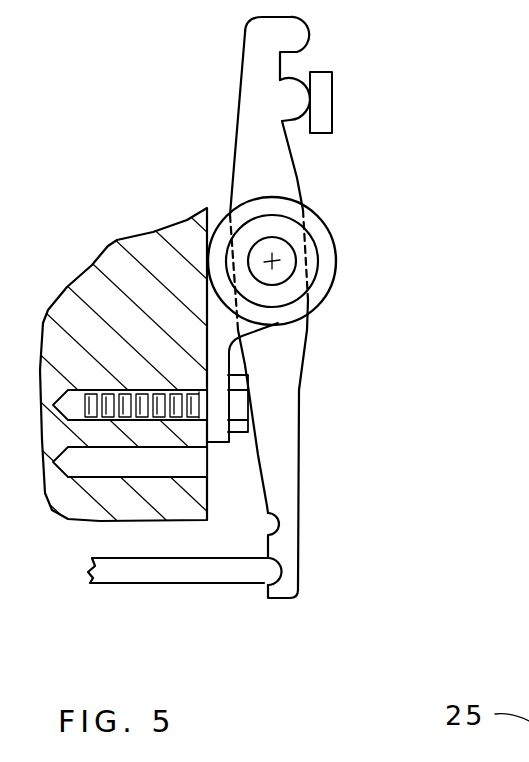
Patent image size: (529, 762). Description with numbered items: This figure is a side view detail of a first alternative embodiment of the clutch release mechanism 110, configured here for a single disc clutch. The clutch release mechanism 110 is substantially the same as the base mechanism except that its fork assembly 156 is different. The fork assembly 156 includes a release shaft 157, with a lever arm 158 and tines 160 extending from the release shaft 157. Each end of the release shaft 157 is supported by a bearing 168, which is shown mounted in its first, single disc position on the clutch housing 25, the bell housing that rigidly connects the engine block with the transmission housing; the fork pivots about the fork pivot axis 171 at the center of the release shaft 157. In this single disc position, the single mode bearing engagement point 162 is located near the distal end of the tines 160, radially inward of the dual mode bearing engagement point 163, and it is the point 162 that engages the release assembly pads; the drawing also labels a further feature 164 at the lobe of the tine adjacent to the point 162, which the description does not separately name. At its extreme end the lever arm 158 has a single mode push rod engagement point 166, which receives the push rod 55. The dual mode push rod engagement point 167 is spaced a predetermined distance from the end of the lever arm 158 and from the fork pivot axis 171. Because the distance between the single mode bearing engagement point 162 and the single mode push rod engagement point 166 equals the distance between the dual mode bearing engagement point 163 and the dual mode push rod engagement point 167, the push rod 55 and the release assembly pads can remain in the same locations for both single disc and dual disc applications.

The clutch housing 25 is at (103, 250).
The push rod 55 is at (168, 587).
The clutch release mechanism 110 is at (434, 213).
The fork assembly 156 is at (298, 395).
The release shaft 157 is at (293, 267).
The lever arm 158 is at (298, 463).
The tines 160 is at (233, 168).
The single mode bearing engagement point 162 is at (307, 100).
The dual mode bearing engagement point 163 is at (310, 32).
The lower lobe 164 is at (280, 117).
The single mode push rod engagement point 166 is at (277, 563).
The dual mode push rod engagement point 167 is at (280, 535).
The bearing 168 is at (317, 303).
The fork pivot axis 171 is at (275, 258).